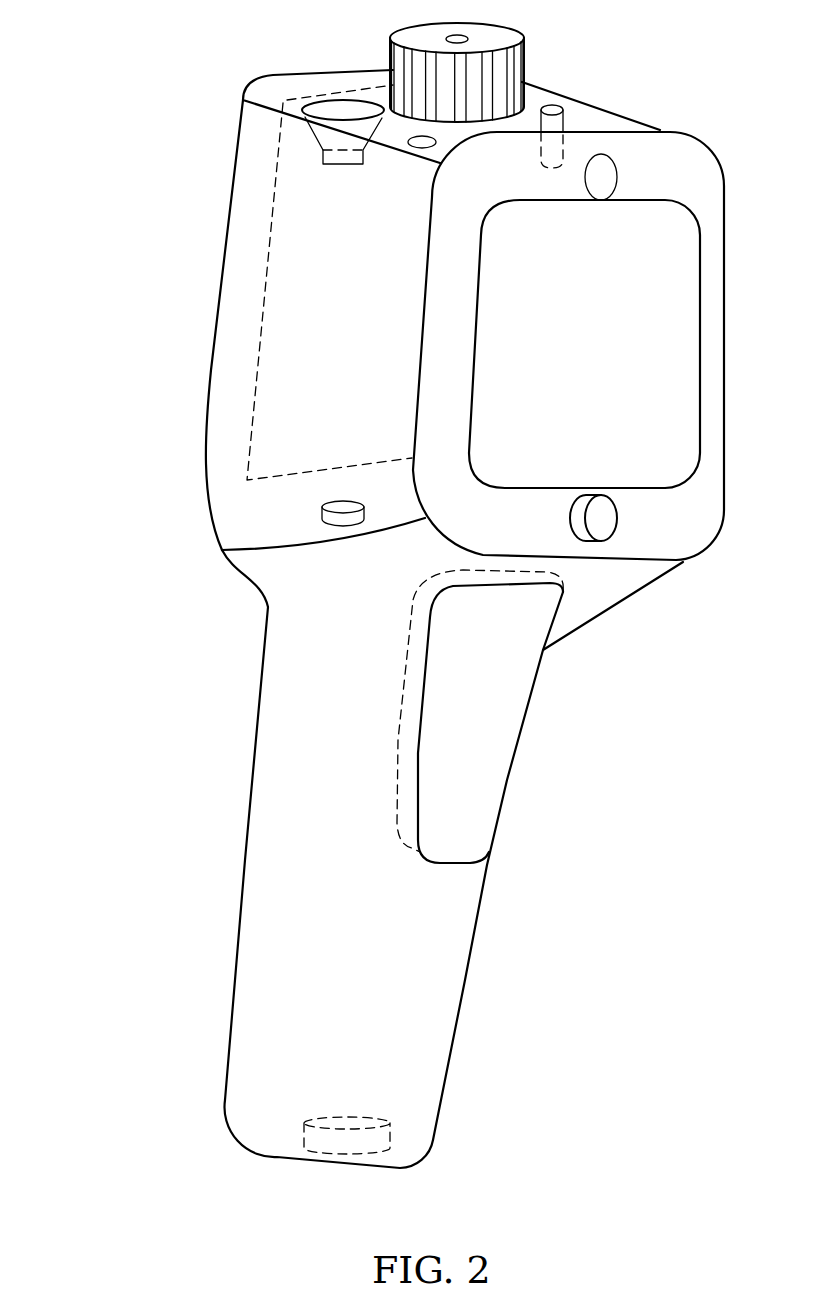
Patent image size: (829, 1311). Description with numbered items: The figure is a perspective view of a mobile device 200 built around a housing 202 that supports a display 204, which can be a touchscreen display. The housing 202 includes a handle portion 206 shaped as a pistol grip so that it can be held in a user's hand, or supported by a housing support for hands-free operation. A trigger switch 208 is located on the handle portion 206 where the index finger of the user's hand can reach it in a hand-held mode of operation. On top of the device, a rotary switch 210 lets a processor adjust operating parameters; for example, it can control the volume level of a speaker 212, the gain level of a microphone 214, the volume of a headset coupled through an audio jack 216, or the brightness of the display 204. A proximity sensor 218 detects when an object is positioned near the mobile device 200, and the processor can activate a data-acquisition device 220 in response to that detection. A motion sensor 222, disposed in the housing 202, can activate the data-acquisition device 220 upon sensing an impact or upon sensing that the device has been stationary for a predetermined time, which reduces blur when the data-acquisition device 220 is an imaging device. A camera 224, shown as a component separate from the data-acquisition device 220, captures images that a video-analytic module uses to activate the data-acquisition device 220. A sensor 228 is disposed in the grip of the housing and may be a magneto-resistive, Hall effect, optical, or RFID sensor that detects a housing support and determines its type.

The mobile device 200 is at (152, 108).
The housing 202 is at (362, 70).
The display 204 is at (373, 295).
The handle portion 206 is at (371, 965).
The trigger switch 208 is at (412, 622).
The rotary switch 210 is at (488, 24).
The speaker 212 is at (337, 100).
The microphone 214 is at (438, 144).
The audio jack 216 is at (562, 108).
The proximity sensor 218 is at (618, 518).
The data-acquisition device 220 is at (606, 360).
The motion sensor 222 is at (322, 517).
The camera 224 is at (618, 180).
The sensor 228 is at (355, 1118).